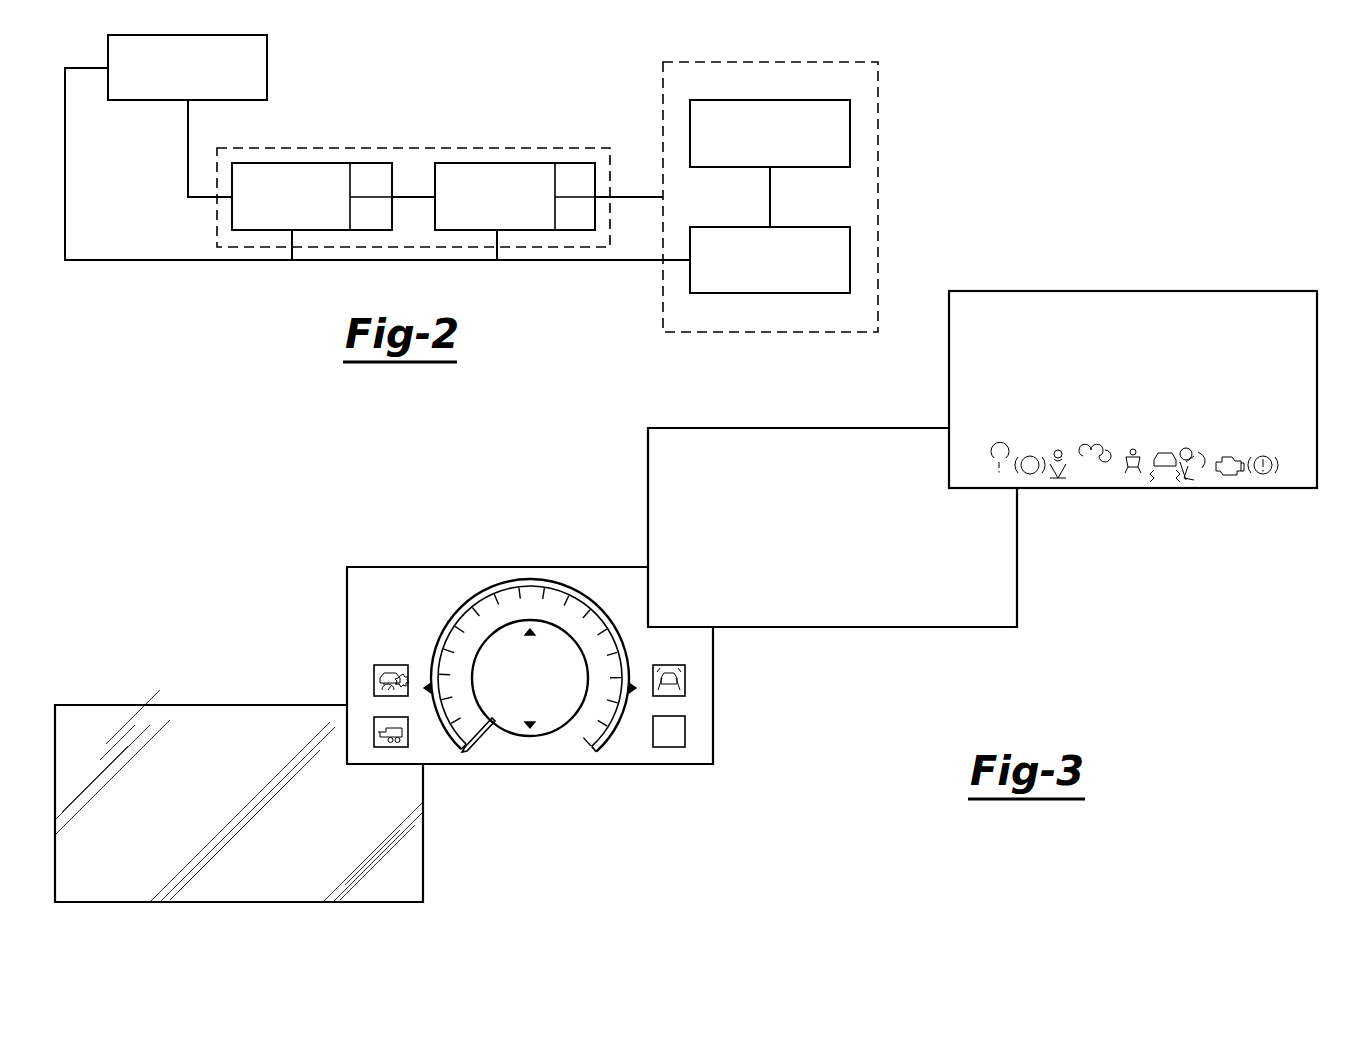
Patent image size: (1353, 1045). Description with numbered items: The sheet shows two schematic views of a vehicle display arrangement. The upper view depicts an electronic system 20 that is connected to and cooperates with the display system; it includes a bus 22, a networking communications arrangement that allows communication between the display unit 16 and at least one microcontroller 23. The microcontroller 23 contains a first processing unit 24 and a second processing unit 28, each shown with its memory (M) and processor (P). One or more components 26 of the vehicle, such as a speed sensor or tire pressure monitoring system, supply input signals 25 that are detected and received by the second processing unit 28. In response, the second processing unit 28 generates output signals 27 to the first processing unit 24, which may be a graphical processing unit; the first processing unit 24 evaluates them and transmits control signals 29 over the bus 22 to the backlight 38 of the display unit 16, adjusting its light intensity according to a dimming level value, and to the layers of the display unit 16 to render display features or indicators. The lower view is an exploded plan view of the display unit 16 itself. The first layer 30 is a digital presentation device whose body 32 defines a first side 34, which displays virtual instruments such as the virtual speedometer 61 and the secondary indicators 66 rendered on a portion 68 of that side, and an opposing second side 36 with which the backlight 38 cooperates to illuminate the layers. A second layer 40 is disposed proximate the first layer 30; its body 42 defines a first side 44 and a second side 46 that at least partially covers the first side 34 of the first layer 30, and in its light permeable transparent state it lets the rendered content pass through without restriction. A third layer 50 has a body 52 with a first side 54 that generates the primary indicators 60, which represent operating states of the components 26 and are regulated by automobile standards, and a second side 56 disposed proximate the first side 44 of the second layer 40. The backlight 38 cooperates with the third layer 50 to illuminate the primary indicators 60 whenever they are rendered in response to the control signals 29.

In FIG. 2, the display unit 16 is at (882, 88).
In FIG. 3, the display unit 16 is at (553, 822).
In FIG. 2, the electronic system 20 is at (250, 308).
In FIG. 2, the bus 22 is at (178, 266).
In FIG. 2, the microcontroller 23 is at (327, 142).
In FIG. 2, the first processing unit 24 is at (505, 212).
In FIG. 2, the input signals 25 is at (188, 158).
In FIG. 2, the components 26 is at (197, 83).
In FIG. 2, the output signals 27 is at (413, 197).
In FIG. 2, the second processing unit 28 is at (302, 212).
In FIG. 2, the control signals 29 is at (640, 197).
In FIG. 2, the first layer 30 is at (775, 146).
In FIG. 3, the first layer 30 is at (660, 768).
In FIG. 3, the body 32 is at (714, 740).
In FIG. 3, the first side 34 is at (423, 597).
In FIG. 3, the second side 36 is at (347, 585).
In FIG. 2, the backlight 38 is at (780, 273).
In FIG. 3, the backlight 38 is at (240, 902).
In FIG. 3, the second layer 40 is at (978, 632).
In FIG. 3, the body 42 is at (1017, 568).
In FIG. 3, the first side 44 is at (733, 450).
In FIG. 3, the second side 46 is at (648, 457).
In FIG. 3, the third layer 50 is at (1245, 496).
In FIG. 3, the body 52 is at (1317, 326).
In FIG. 3, the first side 54 is at (1022, 308).
In FIG. 3, the second side 56 is at (949, 392).
In FIG. 3, the primary indicators 60 is at (1175, 486).
In FIG. 3, the virtual speedometer 61 is at (555, 572).
In FIG. 3, the secondary indicators 66 is at (374, 730).
In FIG. 3, the portion 68 is at (438, 750).